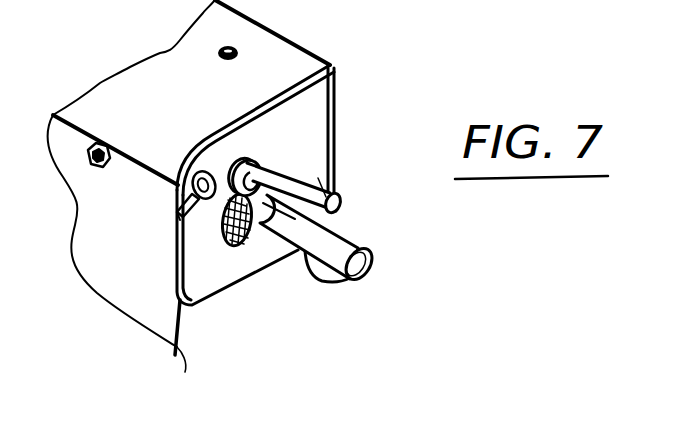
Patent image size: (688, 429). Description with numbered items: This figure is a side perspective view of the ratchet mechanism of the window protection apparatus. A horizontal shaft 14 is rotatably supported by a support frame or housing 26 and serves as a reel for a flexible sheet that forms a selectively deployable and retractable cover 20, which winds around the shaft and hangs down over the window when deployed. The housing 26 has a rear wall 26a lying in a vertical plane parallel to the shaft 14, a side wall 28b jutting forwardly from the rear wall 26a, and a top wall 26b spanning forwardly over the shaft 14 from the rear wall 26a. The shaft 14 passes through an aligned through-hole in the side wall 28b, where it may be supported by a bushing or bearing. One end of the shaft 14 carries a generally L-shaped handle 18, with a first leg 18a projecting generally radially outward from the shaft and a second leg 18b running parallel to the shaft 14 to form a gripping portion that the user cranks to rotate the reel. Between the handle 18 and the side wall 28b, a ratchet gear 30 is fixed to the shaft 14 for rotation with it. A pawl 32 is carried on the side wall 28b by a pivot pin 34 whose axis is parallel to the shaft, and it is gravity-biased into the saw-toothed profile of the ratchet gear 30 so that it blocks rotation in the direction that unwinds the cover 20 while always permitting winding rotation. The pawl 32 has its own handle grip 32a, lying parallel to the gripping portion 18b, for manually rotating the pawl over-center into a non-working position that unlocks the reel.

The horizontal shaft 14 is at (190, 165).
The L-shaped handle 18 is at (346, 278).
The first leg of handle 18a is at (303, 251).
The second leg of handle 18b is at (348, 244).
The cover 20 is at (137, 290).
The support frame or housing 26 is at (302, 152).
The rear wall 26a is at (335, 128).
The top wall 26b is at (277, 48).
The side wall 28b is at (313, 97).
The ratchet gear 30 is at (248, 250).
The pawl 32 is at (333, 165).
The handle grip of pawl 32a is at (339, 183).
The pivot pin 34 is at (263, 160).